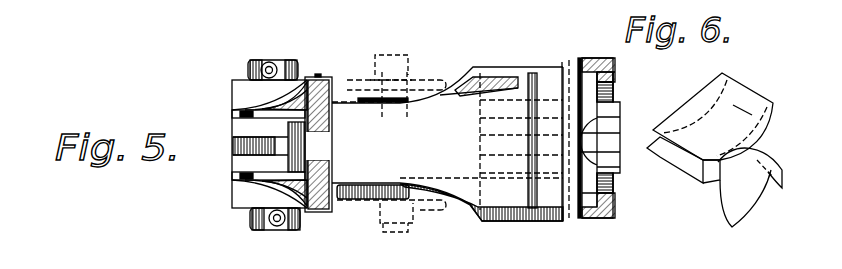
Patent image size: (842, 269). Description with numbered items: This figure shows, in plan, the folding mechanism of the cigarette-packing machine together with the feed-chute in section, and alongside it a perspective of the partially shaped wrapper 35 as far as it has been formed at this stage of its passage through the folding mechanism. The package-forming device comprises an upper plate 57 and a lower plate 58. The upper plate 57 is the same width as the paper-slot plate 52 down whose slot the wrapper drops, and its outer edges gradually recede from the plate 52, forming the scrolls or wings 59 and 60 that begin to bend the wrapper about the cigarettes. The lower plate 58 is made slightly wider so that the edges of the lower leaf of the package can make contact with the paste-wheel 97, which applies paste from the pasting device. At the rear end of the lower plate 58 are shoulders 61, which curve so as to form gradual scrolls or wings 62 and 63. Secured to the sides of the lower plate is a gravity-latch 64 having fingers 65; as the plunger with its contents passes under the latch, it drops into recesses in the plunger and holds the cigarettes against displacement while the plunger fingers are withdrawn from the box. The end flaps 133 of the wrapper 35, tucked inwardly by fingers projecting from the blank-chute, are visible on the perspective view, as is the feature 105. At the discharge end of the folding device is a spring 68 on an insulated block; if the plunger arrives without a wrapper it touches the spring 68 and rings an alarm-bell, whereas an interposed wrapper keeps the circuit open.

In FIG. 5, the wrapper 35 is at (613, 188).
In FIG. 6, the wrapper 35 is at (713, 116).
In FIG. 5, the paper-slot plate 52 is at (613, 72).
In FIG. 5, the upper plate 57 is at (447, 144).
In FIG. 5, the lower plate 58 is at (400, 87).
In FIG. 5, the scroll or wing 59 is at (505, 83).
In FIG. 5, the scroll or wing 60 is at (515, 197).
In FIG. 5, the shoulders 61 is at (342, 92).
In FIG. 5, the scroll or wing 62 is at (272, 102).
In FIG. 5, the scroll or wing 63 is at (282, 185).
In FIG. 5, the gravity-latch 64 is at (318, 143).
In FIG. 5, the fingers 65 is at (238, 115).
In FIG. 5, the spring 68 is at (234, 147).
In FIG. 5, the paste-wheel 97 is at (427, 203).
In FIG. 6, the tongue 105 is at (733, 226).
In FIG. 6, the end flaps 133 is at (703, 180).